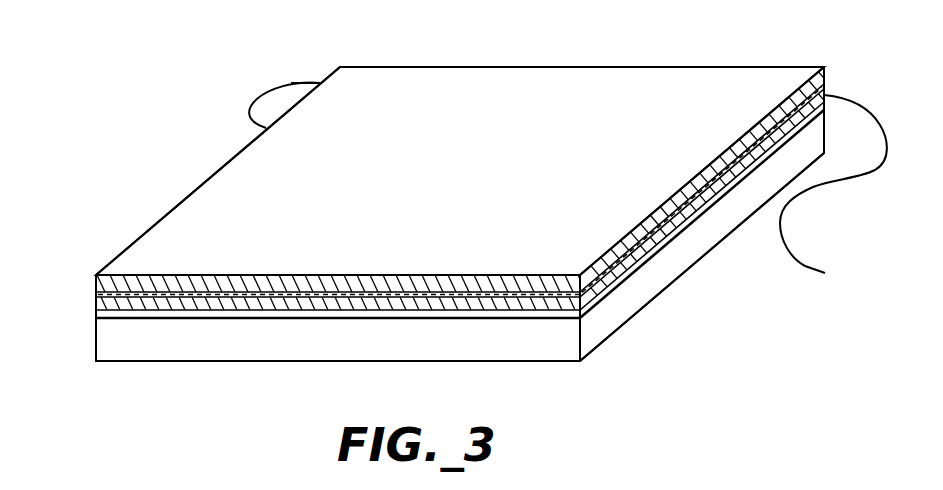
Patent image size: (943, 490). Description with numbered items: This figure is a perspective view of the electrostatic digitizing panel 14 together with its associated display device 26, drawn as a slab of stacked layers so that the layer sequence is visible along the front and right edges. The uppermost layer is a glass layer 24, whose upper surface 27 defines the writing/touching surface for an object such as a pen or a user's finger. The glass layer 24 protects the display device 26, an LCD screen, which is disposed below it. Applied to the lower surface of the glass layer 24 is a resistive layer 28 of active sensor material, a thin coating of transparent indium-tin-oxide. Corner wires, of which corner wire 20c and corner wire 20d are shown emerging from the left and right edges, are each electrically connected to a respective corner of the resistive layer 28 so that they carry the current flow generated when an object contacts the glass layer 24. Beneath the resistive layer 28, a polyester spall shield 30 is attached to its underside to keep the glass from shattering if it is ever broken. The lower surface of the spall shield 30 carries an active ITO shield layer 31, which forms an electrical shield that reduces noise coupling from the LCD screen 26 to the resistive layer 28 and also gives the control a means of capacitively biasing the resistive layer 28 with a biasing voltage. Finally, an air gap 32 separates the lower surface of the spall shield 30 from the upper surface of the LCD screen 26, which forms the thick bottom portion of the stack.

The electrostatic digitizing panel 14 is at (142, 54).
The corner wire 20c is at (291, 83).
The corner wire 20d is at (797, 253).
The glass layer 24 is at (96, 283).
The display device 26 is at (465, 347).
The upper surface 27 is at (577, 80).
The resistive layer 28 is at (193, 298).
The polyester spall shield 30 is at (96, 306).
The active ITO shield layer 31 is at (517, 312).
The air gap 32 is at (300, 318).